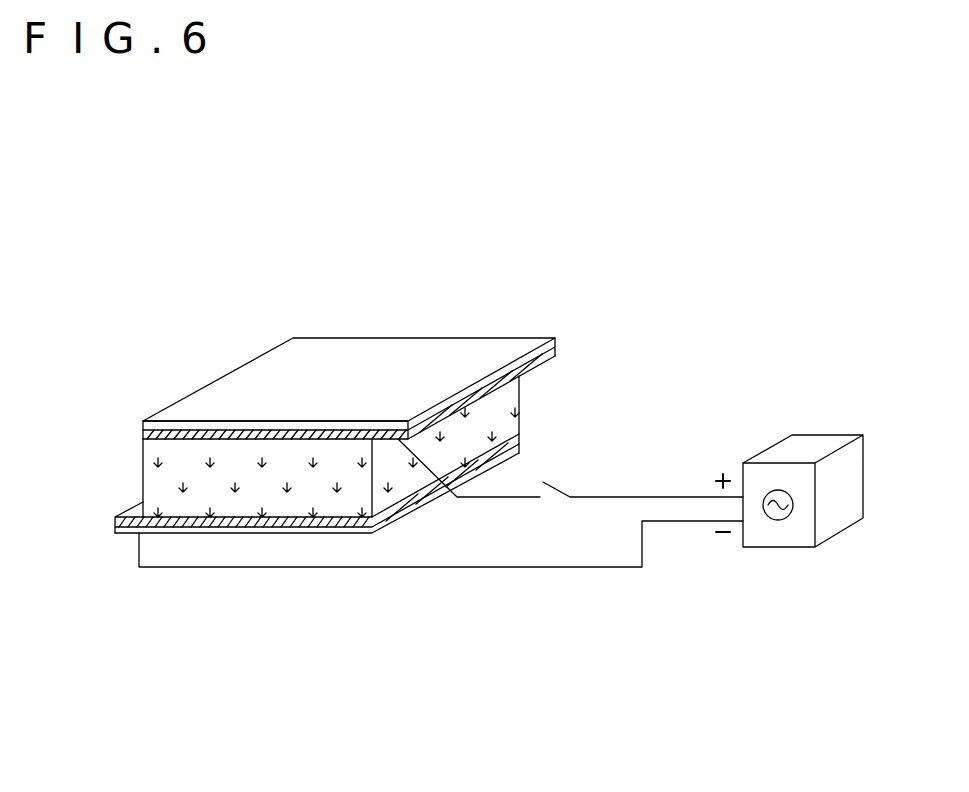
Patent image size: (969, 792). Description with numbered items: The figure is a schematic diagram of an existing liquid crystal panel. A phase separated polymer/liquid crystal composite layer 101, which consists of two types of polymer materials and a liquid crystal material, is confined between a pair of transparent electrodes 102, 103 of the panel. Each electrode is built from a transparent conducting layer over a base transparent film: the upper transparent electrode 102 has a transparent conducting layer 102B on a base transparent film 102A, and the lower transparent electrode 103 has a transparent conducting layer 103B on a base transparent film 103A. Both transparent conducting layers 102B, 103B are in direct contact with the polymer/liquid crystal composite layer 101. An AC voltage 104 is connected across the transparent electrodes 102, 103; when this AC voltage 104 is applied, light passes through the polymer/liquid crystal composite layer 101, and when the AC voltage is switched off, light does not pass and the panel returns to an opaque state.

The polymer/liquid crystal composite layer 101 is at (177, 505).
The transparent electrode 102 is at (471, 372).
The base transparent film 102A is at (557, 340).
The transparent conducting layer 102B is at (557, 353).
The transparent electrode 103 is at (317, 566).
The base transparent film 103A is at (313, 532).
The transparent conducting layer 103B is at (260, 522).
The AC voltage 104 is at (782, 535).